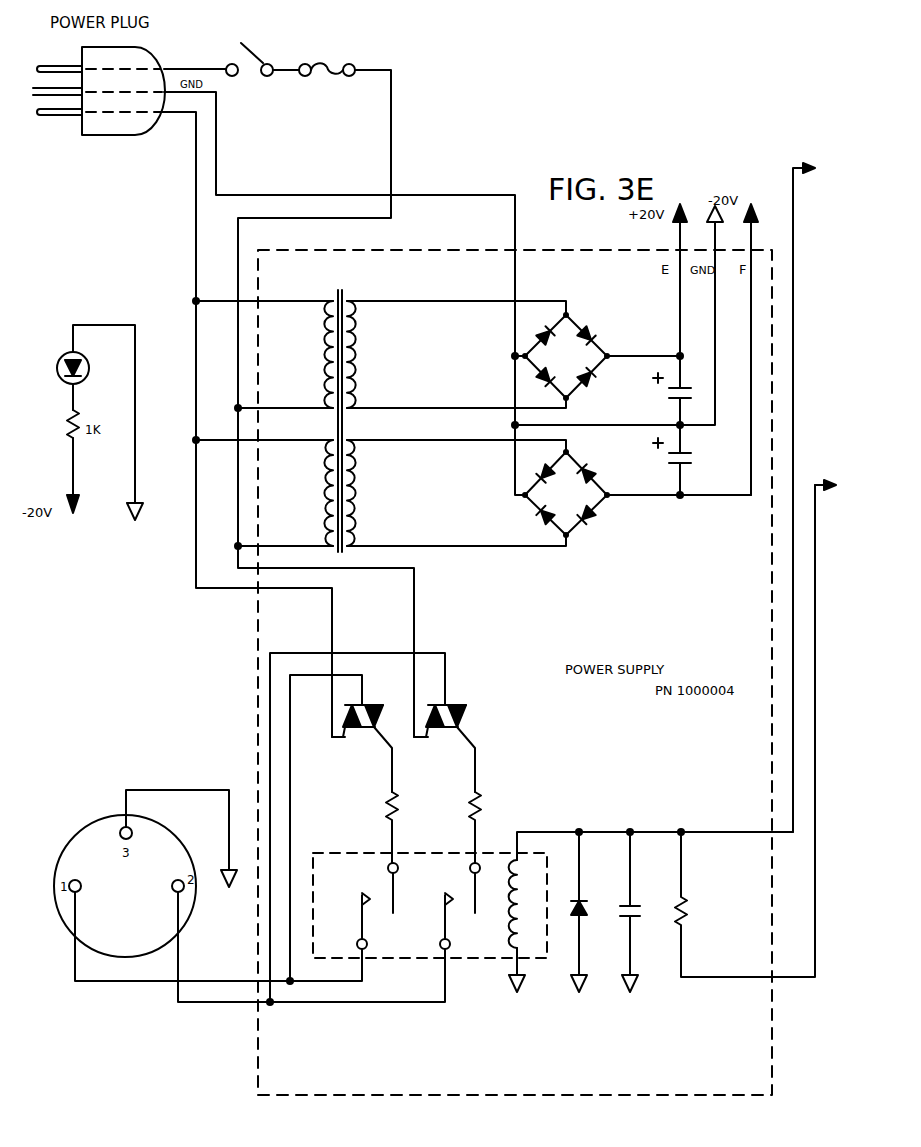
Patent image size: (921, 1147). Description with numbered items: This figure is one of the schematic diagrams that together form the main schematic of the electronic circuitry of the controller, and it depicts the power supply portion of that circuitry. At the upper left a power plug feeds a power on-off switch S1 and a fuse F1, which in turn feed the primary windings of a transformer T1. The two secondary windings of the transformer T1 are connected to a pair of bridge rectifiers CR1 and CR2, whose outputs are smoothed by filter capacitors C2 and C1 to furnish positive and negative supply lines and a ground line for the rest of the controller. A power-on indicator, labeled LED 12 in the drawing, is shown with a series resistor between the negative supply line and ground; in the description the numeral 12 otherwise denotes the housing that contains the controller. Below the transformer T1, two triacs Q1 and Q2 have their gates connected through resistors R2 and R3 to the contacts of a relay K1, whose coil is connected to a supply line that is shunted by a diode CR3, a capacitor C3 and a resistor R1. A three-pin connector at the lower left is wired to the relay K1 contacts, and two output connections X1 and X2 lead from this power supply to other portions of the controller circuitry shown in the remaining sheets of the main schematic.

The power on-off switch S1 is at (255, 78).
The fuse 2A F1 is at (333, 391).
The transformer T1 is at (381, 411).
The bridge rectifier CR1 is at (597, 356).
The bridge rectifier CR2 is at (638, 493).
The filter capacitor 5000uF C1 is at (645, 460).
The filter capacitor 5000uF C2 is at (645, 390).
The housing 12 is at (96, 400).
The triac Q1 is at (362, 743).
The triac Q2 is at (444, 743).
The resistor 3K R2 is at (404, 821).
The resistor 3K R3 is at (487, 821).
The relay K1 is at (553, 911).
The diode 1N4001 CR3 is at (598, 912).
The capacitor 1uF C3 is at (642, 912).
The resistor 300 R1 is at (745, 731).
The output connection X1 is at (815, 497).
The output connection X2 is at (836, 490).